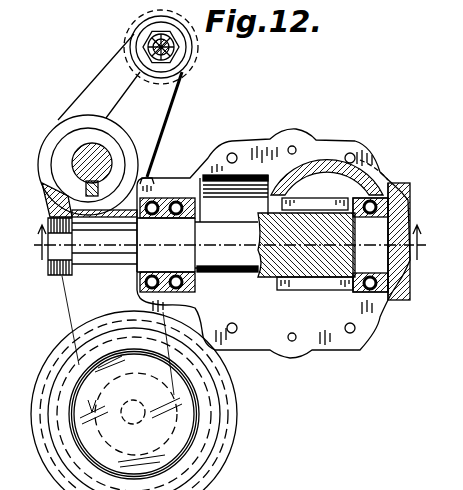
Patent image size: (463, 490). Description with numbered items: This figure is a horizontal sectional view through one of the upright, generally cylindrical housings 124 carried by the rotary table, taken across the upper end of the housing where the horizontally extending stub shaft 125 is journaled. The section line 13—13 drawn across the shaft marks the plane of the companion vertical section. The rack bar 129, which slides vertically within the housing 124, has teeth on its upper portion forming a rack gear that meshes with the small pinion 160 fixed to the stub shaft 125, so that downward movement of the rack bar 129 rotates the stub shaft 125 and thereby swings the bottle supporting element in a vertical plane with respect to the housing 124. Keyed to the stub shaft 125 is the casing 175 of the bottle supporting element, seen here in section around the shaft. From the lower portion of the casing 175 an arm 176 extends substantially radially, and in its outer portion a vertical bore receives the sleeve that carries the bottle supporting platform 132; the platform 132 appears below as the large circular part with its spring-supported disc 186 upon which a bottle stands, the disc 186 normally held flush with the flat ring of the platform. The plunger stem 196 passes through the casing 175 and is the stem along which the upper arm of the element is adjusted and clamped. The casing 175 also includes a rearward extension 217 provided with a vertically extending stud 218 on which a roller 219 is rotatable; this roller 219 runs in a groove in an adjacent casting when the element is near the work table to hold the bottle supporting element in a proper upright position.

The section line 13 is at (231, 242).
The housing 124 is at (310, 145).
The stub shaft 125 is at (225, 255).
The rack bar 129 is at (340, 180).
The bottle supporting platform 132 is at (233, 423).
The pinion 160 is at (305, 288).
The casing 175 is at (59, 130).
The arm 176 is at (82, 311).
The disc 186 is at (182, 395).
The plunger stem 196 is at (100, 162).
The rearward extension 217 is at (110, 90).
The stud 218 is at (147, 44).
The roller 219 is at (190, 70).